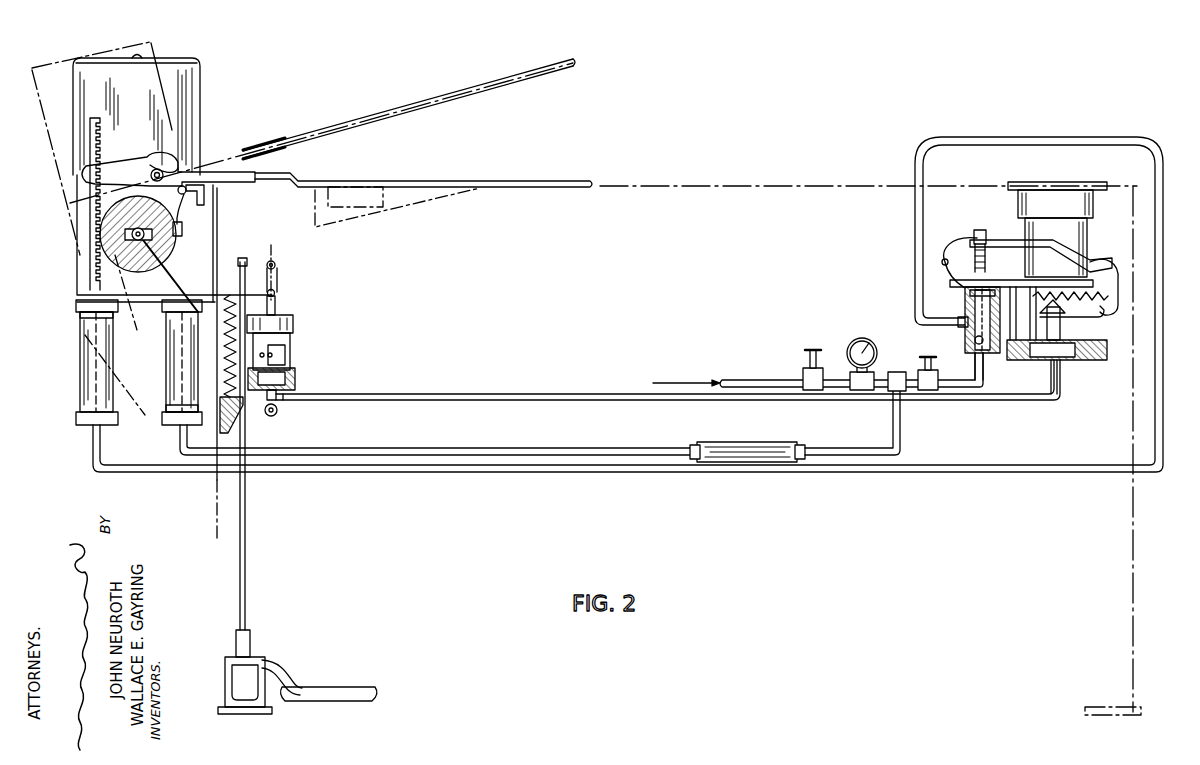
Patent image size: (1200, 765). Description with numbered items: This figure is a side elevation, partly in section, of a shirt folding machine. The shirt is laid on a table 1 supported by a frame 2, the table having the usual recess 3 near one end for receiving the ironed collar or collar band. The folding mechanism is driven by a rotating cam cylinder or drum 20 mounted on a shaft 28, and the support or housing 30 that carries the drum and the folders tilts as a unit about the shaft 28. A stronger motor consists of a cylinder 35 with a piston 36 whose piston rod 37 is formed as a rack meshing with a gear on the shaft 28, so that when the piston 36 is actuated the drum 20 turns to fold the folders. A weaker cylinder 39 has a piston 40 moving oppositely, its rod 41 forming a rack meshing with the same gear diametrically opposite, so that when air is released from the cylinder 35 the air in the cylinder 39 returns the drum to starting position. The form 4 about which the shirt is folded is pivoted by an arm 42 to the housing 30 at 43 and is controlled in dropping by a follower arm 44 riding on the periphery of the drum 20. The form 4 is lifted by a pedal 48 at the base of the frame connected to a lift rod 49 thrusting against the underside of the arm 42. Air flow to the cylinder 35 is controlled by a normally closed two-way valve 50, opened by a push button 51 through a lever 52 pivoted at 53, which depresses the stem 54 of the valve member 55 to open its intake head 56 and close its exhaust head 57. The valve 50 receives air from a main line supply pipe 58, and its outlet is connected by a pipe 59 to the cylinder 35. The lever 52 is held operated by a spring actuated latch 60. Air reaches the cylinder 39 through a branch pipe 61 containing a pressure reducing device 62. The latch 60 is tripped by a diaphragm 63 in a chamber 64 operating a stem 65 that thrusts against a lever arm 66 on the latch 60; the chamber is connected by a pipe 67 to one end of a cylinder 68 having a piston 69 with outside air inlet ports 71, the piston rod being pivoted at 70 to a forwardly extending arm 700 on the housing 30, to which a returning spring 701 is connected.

The table 1 is at (834, 186).
The frame 2 is at (1132, 546).
The recess 3 is at (393, 186).
The form 4 is at (520, 80).
The rotating cylinder or drum 20 is at (106, 250).
The shaft 28 is at (130, 232).
The support or housing 30 is at (190, 83).
The cylinder of the stronger motor 35 is at (88, 383).
The piston 36 is at (80, 327).
The piston rod 37 is at (96, 147).
The cylinder of the weaker unit 39 is at (168, 340).
The piston 40 is at (170, 414).
The rod 41 is at (184, 224).
The arm 42 is at (212, 172).
The pivot 43 is at (163, 172).
The follower arm 44 is at (207, 197).
The pedal 48 is at (340, 690).
The lift rod 49 is at (243, 502).
The valve 50 is at (968, 308).
The push button 51 is at (1068, 186).
The lever 52 is at (1017, 241).
The pivot 53 is at (945, 258).
The stem 54 is at (1029, 275).
The valve member 55 is at (958, 328).
The intake head 56 is at (970, 343).
The exhaust head 57 is at (968, 298).
The main line air supply pipe 58 is at (788, 380).
The pipe 59 is at (532, 471).
The spring actuated latch 60 is at (1114, 280).
The branch pipe 61 is at (900, 431).
The pressure reducing device 62 is at (778, 447).
The diaphragm 63 is at (1088, 363).
The chamber 64 is at (1094, 338).
The stem 65 is at (1044, 361).
The lever arm 66 is at (1096, 322).
The pipe 67 is at (496, 398).
The cylinder 68 is at (293, 334).
The piston 69 is at (298, 375).
The pivot 70 is at (277, 289).
The outside air inlet ports 71 is at (282, 358).
The forwardly extending arm 700 is at (240, 292).
The returning spring 701 is at (236, 395).